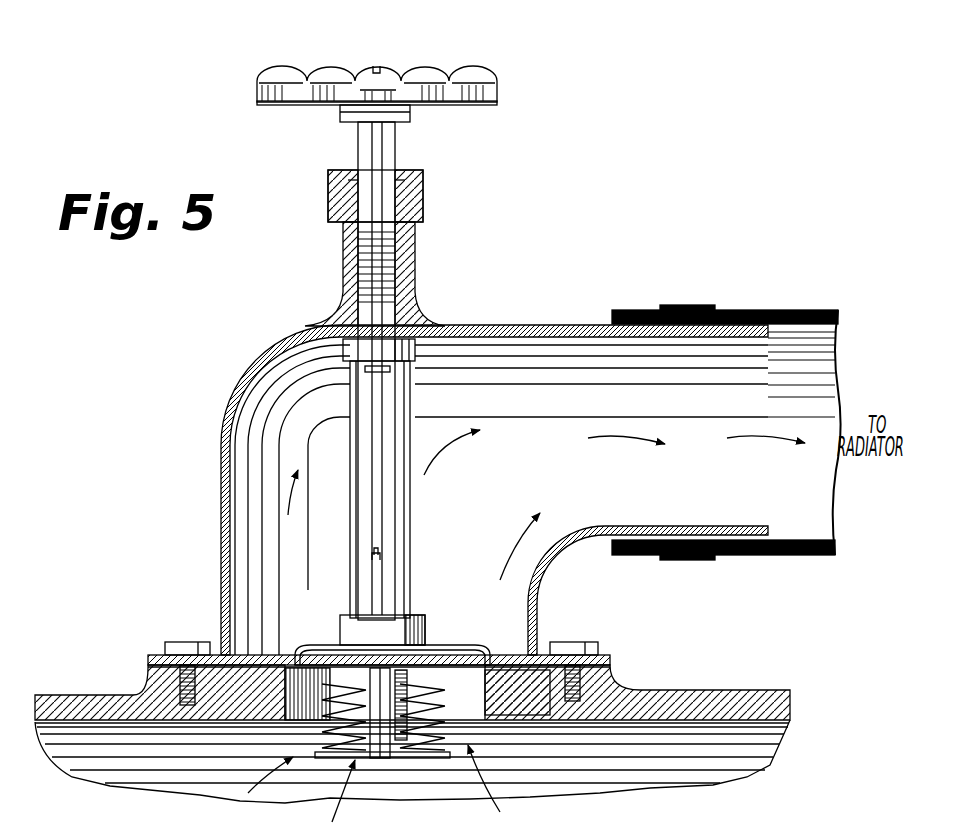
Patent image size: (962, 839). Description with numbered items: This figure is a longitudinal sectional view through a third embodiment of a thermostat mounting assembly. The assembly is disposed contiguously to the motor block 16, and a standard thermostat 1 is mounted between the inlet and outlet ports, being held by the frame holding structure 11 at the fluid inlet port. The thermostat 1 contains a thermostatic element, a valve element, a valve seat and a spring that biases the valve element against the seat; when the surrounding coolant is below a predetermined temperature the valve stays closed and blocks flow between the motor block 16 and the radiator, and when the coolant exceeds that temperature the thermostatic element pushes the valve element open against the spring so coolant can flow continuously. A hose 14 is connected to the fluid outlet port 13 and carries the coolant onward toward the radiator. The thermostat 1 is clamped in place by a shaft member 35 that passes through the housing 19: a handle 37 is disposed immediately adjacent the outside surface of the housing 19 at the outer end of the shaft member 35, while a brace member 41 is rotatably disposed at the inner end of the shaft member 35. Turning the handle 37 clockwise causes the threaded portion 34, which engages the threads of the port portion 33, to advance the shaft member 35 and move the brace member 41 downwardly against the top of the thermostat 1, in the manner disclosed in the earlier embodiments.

The thermostat 1 is at (462, 515).
The frame holding structure 11 is at (285, 652).
The fluid outlet port 13 is at (693, 320).
The hose 14 is at (772, 312).
The motor block 16 is at (755, 690).
The housing 19 is at (216, 440).
The port portion 33 is at (410, 312).
The threaded portion 34 is at (375, 288).
The shaft member 35 is at (385, 208).
The handle 37 is at (420, 64).
The brace member 41 is at (405, 512).